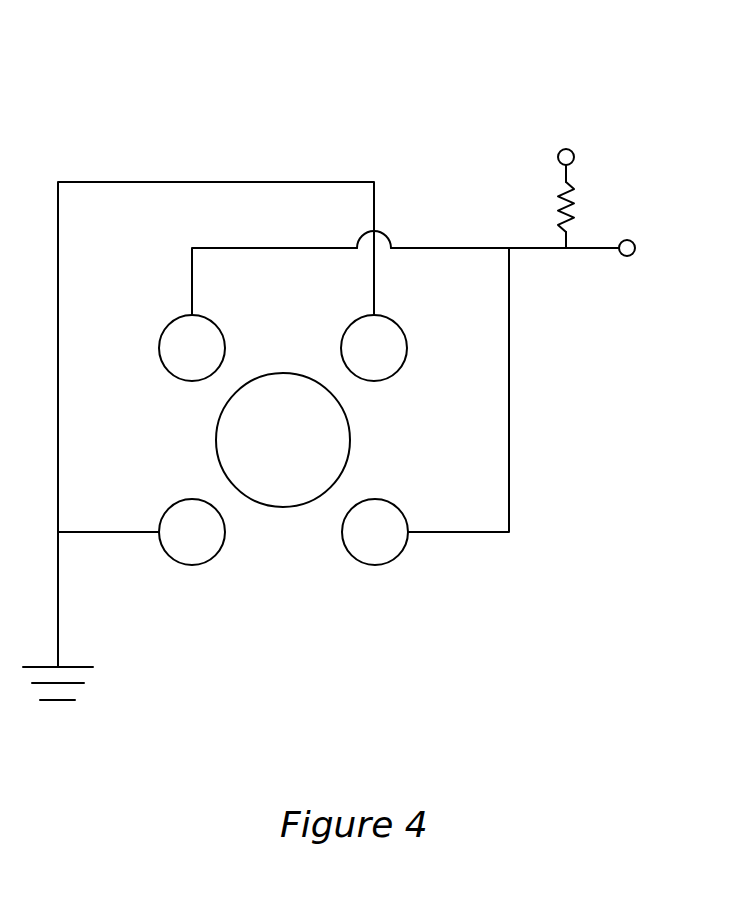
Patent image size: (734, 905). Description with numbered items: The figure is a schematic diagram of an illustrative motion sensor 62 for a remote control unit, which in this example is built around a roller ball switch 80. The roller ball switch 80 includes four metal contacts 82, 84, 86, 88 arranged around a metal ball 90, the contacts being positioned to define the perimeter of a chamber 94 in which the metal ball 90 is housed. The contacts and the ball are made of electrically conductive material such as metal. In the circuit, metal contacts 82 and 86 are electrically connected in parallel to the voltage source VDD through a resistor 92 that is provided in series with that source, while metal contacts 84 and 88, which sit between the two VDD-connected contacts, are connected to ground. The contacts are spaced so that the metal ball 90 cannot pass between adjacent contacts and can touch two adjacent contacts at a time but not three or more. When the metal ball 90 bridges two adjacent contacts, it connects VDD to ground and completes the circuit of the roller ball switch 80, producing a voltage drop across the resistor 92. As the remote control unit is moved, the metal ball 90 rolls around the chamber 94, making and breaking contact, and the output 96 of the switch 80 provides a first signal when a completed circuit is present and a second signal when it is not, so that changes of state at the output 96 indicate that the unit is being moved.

The motion sensor 62 is at (452, 80).
The roller ball switch 80 is at (400, 218).
The metal contact 82 is at (169, 326).
The metal contact 84 is at (397, 324).
The metal contact 86 is at (398, 508).
The metal contact 88 is at (169, 509).
The metal ball 90 is at (217, 438).
The resistor 92 is at (572, 212).
The chamber 94 is at (291, 530).
The output 96 is at (633, 255).